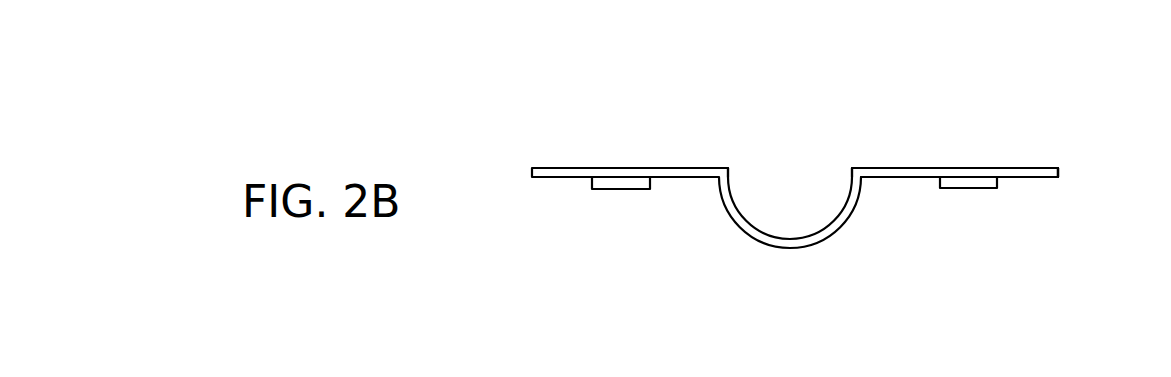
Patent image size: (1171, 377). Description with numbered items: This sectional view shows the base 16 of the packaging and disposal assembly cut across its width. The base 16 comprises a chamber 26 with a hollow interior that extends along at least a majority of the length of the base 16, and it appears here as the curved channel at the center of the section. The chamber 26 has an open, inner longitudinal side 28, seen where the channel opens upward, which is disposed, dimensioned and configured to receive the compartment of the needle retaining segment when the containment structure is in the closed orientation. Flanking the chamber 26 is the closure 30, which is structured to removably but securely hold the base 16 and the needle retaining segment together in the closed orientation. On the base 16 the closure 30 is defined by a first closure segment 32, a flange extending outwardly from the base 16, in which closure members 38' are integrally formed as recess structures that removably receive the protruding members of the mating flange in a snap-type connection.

The base 16 is at (731, 213).
The chamber 26 is at (795, 194).
The open inner longitudinal side 28 is at (729, 168).
The closure 30 is at (955, 145).
The first closure segment 32 is at (1027, 167).
The closure member 38' is at (797, 217).